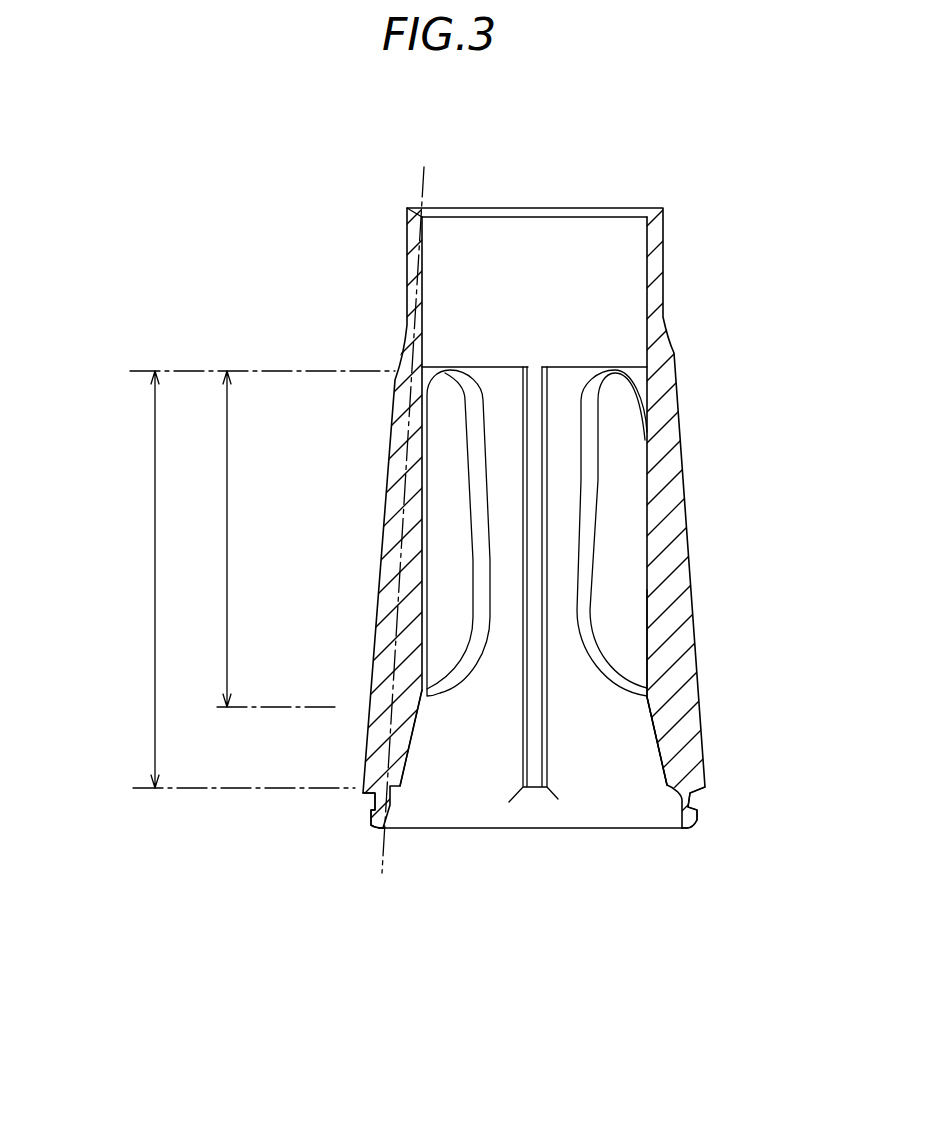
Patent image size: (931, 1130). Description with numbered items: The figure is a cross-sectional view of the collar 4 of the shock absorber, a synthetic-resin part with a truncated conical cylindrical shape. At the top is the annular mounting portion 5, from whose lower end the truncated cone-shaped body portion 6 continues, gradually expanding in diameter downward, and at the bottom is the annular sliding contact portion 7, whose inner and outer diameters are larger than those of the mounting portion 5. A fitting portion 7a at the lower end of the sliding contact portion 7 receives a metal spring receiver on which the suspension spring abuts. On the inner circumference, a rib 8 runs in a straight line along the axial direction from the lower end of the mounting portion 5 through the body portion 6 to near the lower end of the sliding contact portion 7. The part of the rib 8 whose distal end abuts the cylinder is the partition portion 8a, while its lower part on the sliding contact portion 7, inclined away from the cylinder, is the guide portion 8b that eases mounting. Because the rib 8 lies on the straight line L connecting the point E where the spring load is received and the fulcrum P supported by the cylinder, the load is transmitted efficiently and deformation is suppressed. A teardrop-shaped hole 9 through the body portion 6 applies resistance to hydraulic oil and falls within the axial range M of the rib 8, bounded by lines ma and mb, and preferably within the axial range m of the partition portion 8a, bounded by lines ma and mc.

The collar 4 is at (690, 211).
The mounting portion 5 is at (665, 280).
The body portion 6 is at (563, 467).
The sliding contact portion 7 is at (712, 735).
The fitting portion 7a is at (697, 815).
The rib 8 is at (423, 596).
The partition portion 8a is at (645, 598).
The guide portion 8b is at (668, 731).
The hole 9 is at (440, 440).
The straight line L is at (423, 182).
The fulcrum P is at (418, 211).
The point where the load is received E is at (383, 830).
The axial range M is at (138, 579).
The axial range m is at (212, 539).
The straight line ma is at (236, 367).
The straight line mb is at (220, 786).
The straight line mc is at (255, 702).